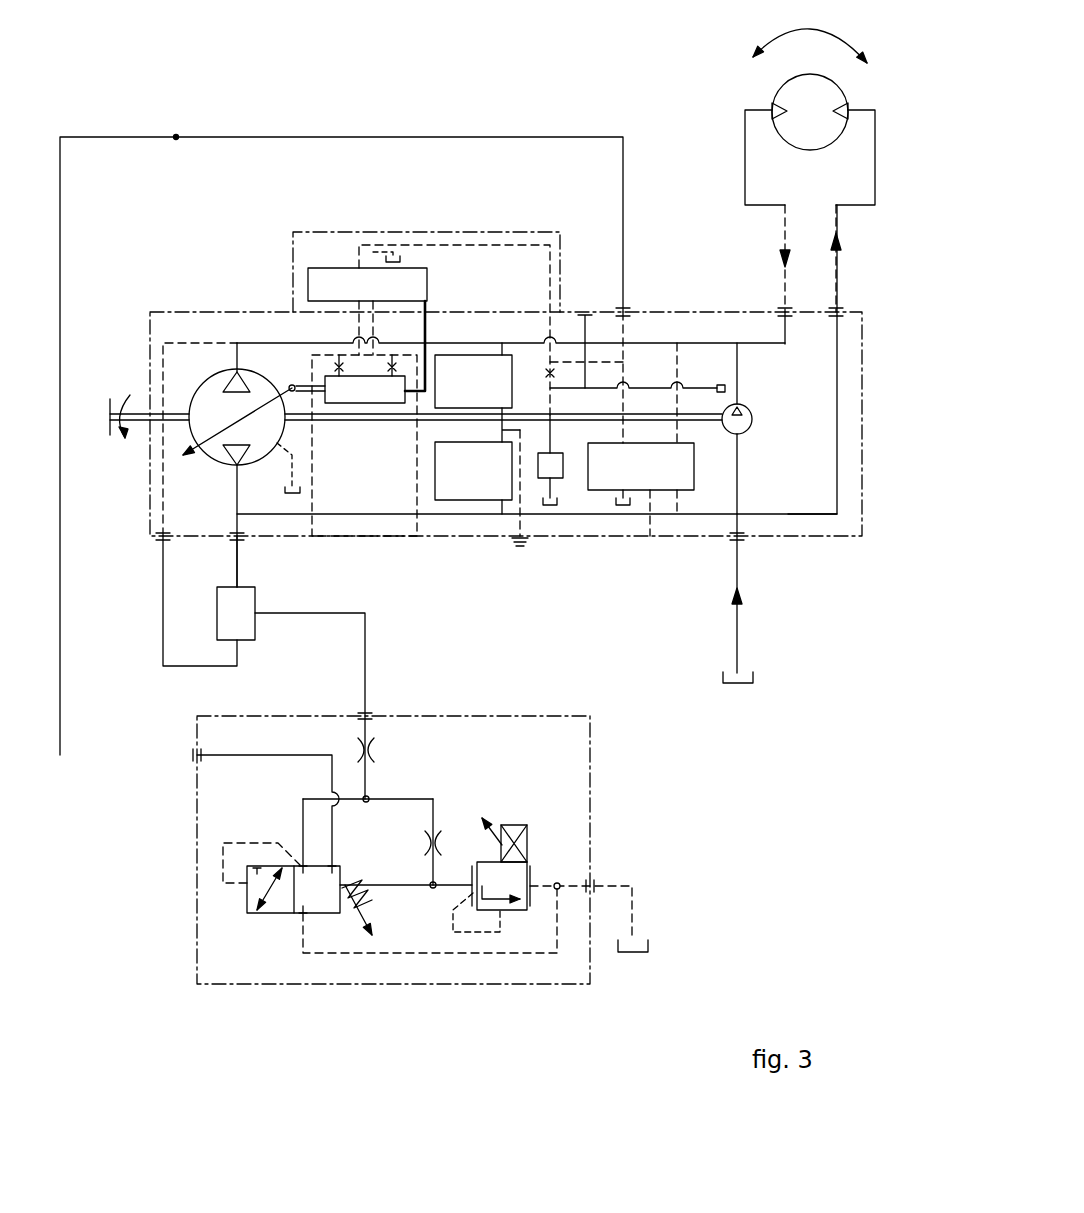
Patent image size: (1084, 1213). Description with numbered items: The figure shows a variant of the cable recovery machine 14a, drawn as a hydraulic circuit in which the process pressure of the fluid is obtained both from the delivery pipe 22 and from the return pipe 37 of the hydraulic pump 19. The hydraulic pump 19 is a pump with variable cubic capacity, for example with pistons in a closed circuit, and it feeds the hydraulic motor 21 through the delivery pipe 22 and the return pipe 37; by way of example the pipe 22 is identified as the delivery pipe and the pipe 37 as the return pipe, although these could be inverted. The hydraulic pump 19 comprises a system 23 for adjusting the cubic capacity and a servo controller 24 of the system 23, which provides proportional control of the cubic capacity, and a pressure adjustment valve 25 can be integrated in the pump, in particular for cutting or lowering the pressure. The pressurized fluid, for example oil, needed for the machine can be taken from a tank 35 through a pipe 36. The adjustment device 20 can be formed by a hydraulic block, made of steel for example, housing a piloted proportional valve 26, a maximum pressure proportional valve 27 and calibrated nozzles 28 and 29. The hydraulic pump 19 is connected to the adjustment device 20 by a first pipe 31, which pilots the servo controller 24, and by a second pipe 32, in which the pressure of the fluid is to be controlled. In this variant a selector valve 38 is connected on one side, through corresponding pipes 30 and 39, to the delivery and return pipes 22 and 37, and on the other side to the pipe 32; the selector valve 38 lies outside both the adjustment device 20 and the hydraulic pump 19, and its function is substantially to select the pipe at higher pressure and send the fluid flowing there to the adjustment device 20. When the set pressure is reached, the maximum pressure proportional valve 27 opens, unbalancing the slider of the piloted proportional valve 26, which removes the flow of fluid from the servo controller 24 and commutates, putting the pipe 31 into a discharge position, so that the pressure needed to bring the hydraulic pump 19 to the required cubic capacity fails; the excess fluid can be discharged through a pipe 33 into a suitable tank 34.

The cable recovery machine 14a is at (293, 62).
The hydraulic pump 19 is at (146, 327).
The adjustment device 20 is at (192, 846).
The hydraulic motor 21 is at (877, 85).
The delivery pipe 22 is at (788, 514).
The system for adjusting the cubic capacity 23 is at (397, 430).
The servo controller 24 is at (335, 268).
The pressure adjustment valve 25 is at (657, 485).
The piloted proportional valve 26 is at (287, 902).
The maximum pressure proportional valve 27 is at (512, 875).
The calibrated nozzle 28 is at (372, 748).
The calibrated nozzle 29 is at (440, 843).
The pipe 30 is at (237, 563).
The first pipe 31 is at (176, 137).
The second pipe 32 is at (365, 638).
The pipe 33 is at (632, 908).
The tank 34 is at (636, 952).
The tank 35 is at (744, 683).
The pipe 36 is at (737, 624).
The return pipe 37 is at (688, 344).
The selector valve 38 is at (252, 620).
The pipe 39 is at (163, 616).